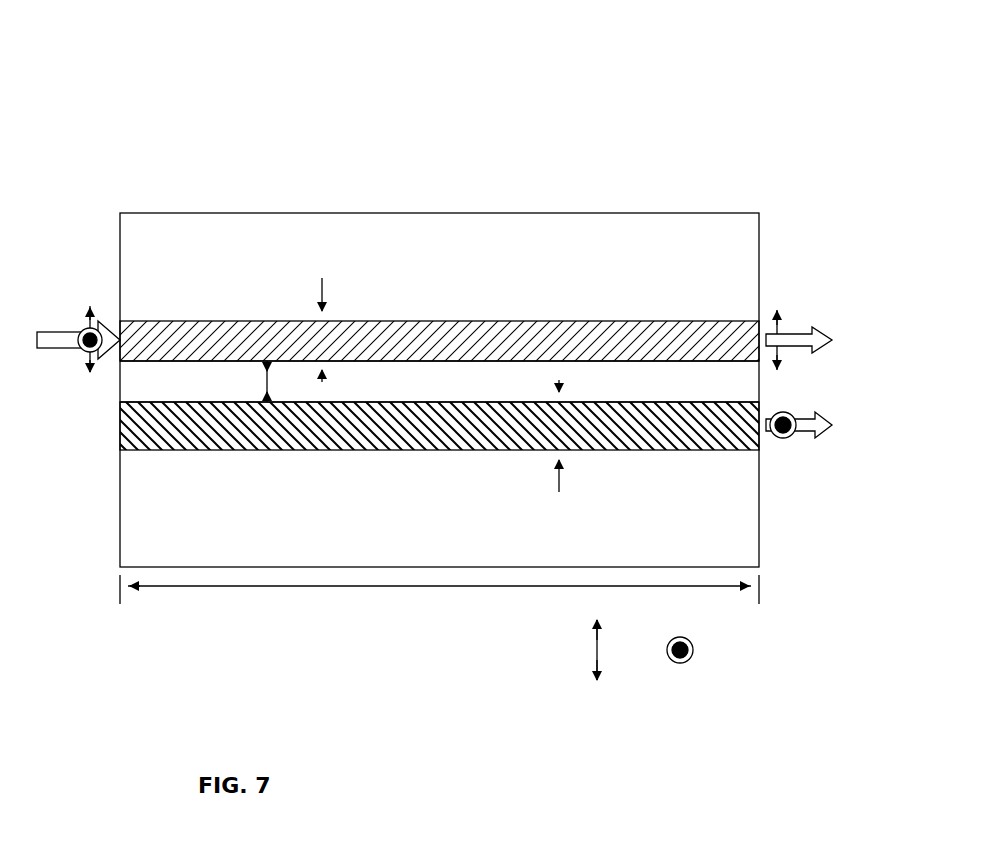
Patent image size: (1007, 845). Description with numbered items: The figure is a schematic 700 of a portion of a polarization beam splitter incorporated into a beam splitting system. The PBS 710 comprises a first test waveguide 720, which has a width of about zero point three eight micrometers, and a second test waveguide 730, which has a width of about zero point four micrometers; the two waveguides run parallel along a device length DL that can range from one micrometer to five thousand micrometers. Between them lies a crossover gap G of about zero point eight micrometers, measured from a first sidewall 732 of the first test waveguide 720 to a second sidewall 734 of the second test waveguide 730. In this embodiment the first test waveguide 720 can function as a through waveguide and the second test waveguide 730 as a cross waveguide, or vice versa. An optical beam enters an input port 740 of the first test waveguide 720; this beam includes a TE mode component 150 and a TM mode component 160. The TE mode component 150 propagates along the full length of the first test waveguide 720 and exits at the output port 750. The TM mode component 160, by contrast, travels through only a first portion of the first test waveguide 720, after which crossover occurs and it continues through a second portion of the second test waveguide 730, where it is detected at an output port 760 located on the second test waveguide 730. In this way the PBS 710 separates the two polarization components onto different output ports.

The schematic 700 is at (168, 52).
The PBS 710 is at (588, 213).
The first test waveguide 720 is at (439, 341).
The second test waveguide 730 is at (439, 426).
The first sidewall 732 is at (202, 362).
The second sidewall 734 is at (645, 402).
The input port 740 is at (120, 330).
The output port 750 is at (760, 320).
The output port 760 is at (760, 448).
The TE mode component 150 is at (597, 668).
The TM mode component 160 is at (688, 661).